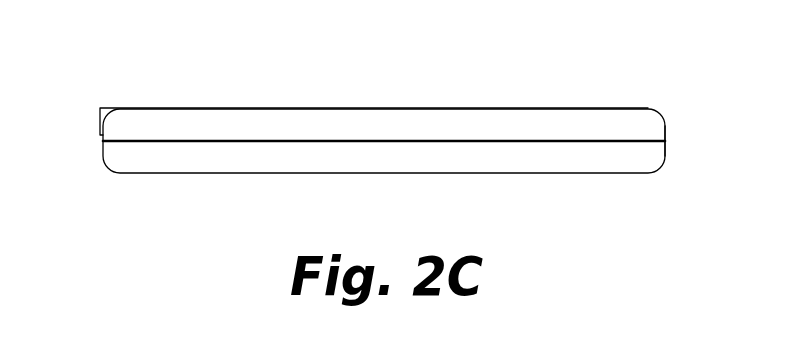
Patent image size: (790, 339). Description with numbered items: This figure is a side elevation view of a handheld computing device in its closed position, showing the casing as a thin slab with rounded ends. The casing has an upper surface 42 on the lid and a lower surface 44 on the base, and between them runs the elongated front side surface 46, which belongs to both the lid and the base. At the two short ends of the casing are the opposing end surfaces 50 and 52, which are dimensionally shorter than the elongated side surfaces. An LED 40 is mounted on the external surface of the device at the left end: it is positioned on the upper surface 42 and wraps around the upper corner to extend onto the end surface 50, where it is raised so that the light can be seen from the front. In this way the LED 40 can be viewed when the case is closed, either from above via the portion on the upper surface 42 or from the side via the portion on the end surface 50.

The LED 40 is at (100, 108).
The upper surface 42 is at (567, 108).
The lower surface 44 is at (567, 174).
The front side surface 46 is at (333, 127).
The end surface 50 is at (103, 142).
The end surface 52 is at (665, 140).